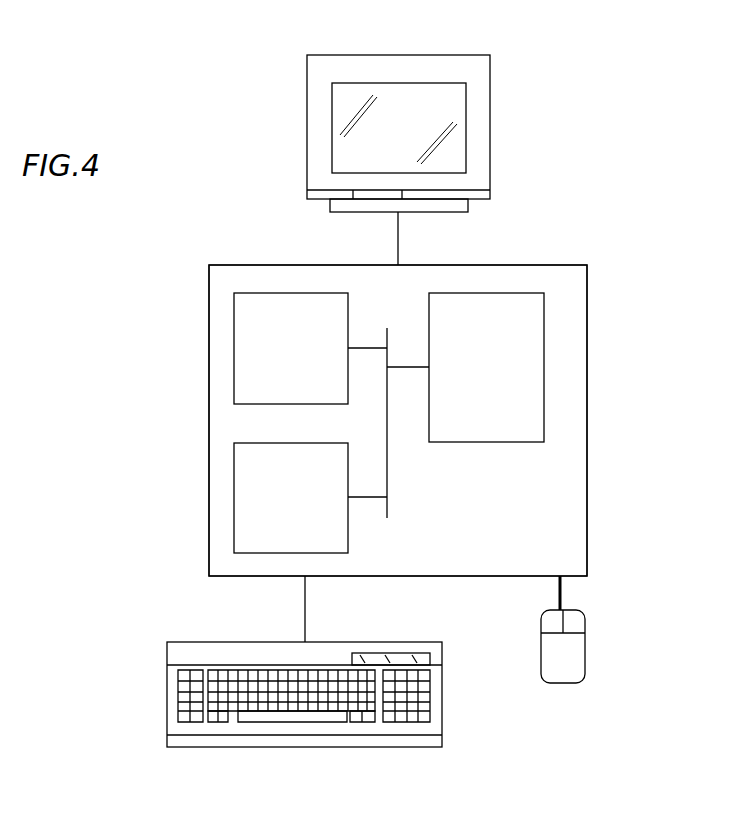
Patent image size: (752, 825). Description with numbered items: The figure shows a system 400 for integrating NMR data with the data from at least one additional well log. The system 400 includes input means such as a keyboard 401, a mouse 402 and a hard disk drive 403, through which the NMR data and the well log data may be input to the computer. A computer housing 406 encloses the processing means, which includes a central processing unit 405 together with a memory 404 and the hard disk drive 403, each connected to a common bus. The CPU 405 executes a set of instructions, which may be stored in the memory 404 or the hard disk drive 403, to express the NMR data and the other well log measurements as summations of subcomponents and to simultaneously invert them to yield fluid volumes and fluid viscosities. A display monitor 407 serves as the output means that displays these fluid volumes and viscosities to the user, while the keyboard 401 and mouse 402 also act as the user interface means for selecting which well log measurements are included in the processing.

The system 400 is at (592, 167).
The keyboard 401 is at (213, 748).
The mouse 402 is at (585, 647).
The hard disk drive 403 is at (234, 463).
The memory 404 is at (234, 360).
The central processing unit (CPU) 405 is at (544, 350).
The computer housing 406 is at (587, 300).
The display monitor 407 is at (307, 104).